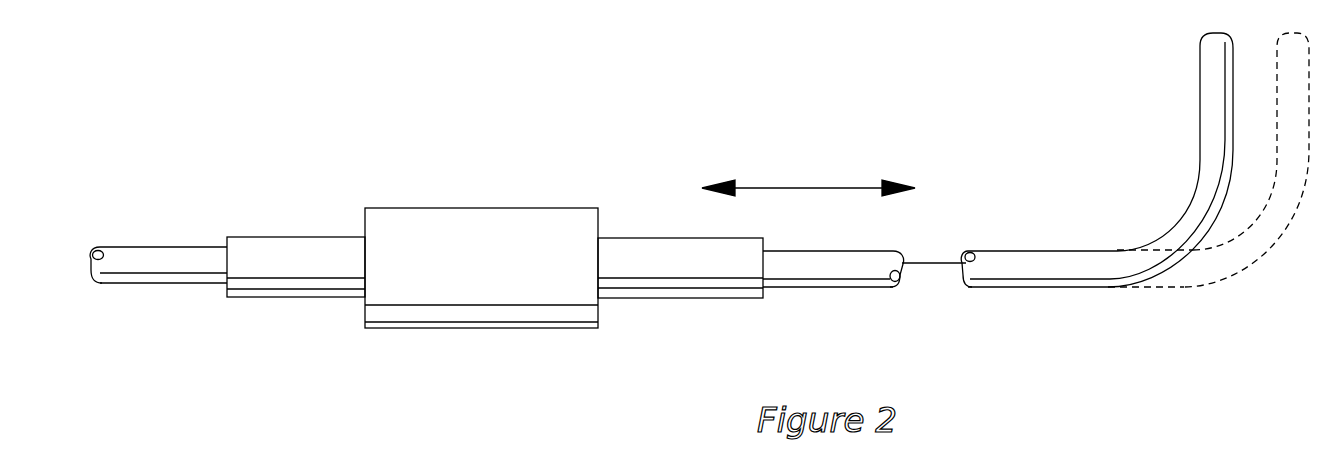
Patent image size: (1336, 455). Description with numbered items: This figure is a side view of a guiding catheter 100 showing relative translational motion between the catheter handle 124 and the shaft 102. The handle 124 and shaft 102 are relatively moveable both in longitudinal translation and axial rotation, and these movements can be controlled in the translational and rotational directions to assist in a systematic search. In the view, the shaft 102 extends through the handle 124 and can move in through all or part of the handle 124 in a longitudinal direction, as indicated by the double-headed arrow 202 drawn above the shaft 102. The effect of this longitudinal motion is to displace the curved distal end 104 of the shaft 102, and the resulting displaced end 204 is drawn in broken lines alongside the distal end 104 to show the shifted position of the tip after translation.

The catheter 100 is at (235, 138).
The shaft 102 is at (185, 282).
The distal end 104 is at (1147, 137).
The handle 124 is at (483, 208).
The arrow 202 is at (828, 187).
The displaced end 204 is at (1205, 280).